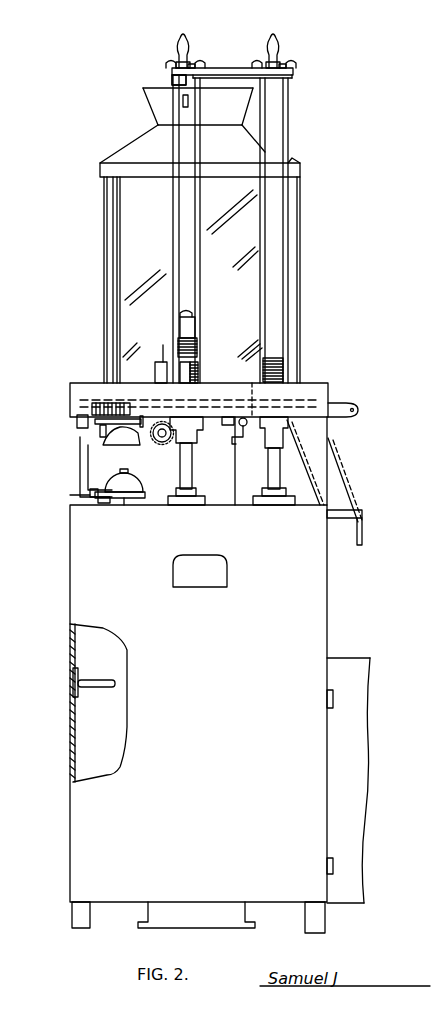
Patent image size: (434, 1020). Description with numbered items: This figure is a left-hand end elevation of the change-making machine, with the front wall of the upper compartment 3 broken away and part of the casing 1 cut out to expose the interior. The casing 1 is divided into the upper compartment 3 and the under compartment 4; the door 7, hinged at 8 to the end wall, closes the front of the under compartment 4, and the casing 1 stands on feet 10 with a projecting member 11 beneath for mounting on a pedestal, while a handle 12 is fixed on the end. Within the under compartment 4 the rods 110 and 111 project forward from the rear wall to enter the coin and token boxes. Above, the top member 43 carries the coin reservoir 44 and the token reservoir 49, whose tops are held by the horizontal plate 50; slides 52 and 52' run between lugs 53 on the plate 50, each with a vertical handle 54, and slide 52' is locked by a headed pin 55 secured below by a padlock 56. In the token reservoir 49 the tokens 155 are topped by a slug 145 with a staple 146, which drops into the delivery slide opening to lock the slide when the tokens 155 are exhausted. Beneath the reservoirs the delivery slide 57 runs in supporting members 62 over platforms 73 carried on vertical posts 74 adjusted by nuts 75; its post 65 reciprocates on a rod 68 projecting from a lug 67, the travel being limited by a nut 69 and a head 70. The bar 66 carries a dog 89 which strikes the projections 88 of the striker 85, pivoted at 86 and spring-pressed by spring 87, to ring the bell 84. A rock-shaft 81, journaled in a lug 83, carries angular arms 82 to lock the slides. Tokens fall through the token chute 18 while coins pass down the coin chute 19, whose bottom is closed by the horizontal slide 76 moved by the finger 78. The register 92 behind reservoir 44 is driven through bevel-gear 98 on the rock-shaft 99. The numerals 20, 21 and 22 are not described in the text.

The casing 1 is at (198, 659).
The upper compartment 3 is at (305, 462).
The under compartment 4 is at (98, 703).
The door 7 is at (348, 780).
The hinges 8 is at (327, 698).
The feet 10 is at (72, 918).
The projecting member 11 is at (196, 915).
The handles 12 is at (200, 571).
The token chute 18 is at (234, 488).
The coin chute 19 is at (318, 462).
The upright post 20 is at (107, 285).
The post 21 is at (118, 308).
The hopper 22 is at (200, 132).
The top member 43 is at (227, 390).
The coin reservoir 44 is at (290, 263).
The token reservoirs 49 is at (178, 248).
The horizontal plate 50 is at (294, 75).
The slide 52 is at (298, 49).
The slide 52' is at (206, 51).
The lugs 53 is at (168, 62).
The vertical handle 54 is at (185, 40).
The pin 55 is at (172, 82).
The padlock 56 is at (183, 101).
The delivery slide 57 is at (306, 406).
The supporting members 62 is at (228, 424).
The post 65 is at (97, 426).
The bar 66 is at (84, 462).
The lugs 67 is at (77, 420).
The rod 68 is at (92, 405).
The nut 69 is at (80, 439).
The head 70 is at (148, 405).
The platform 73 is at (195, 417).
The vertical post 74 is at (182, 505).
The nuts 75 is at (200, 505).
The horizontal slide 76 is at (353, 530).
The finger 78 is at (362, 541).
The rock-shaft 81 is at (245, 427).
The angular arms 82 is at (234, 437).
The lug 83 is at (252, 390).
The bell 84 is at (127, 499).
The striker 85 is at (78, 497).
The pivot 86 is at (93, 505).
The spring 87 is at (106, 505).
The projections 88 is at (121, 434).
The dog 89 is at (106, 465).
The register 92 is at (169, 355).
The bevel-gear 98 is at (155, 441).
The horizontal rock-shaft 99 is at (163, 444).
The rod 110 is at (100, 680).
The rod 111 is at (88, 688).
The slug 145 is at (192, 330).
The staple 146 is at (190, 312).
The tokens 155 is at (197, 347).